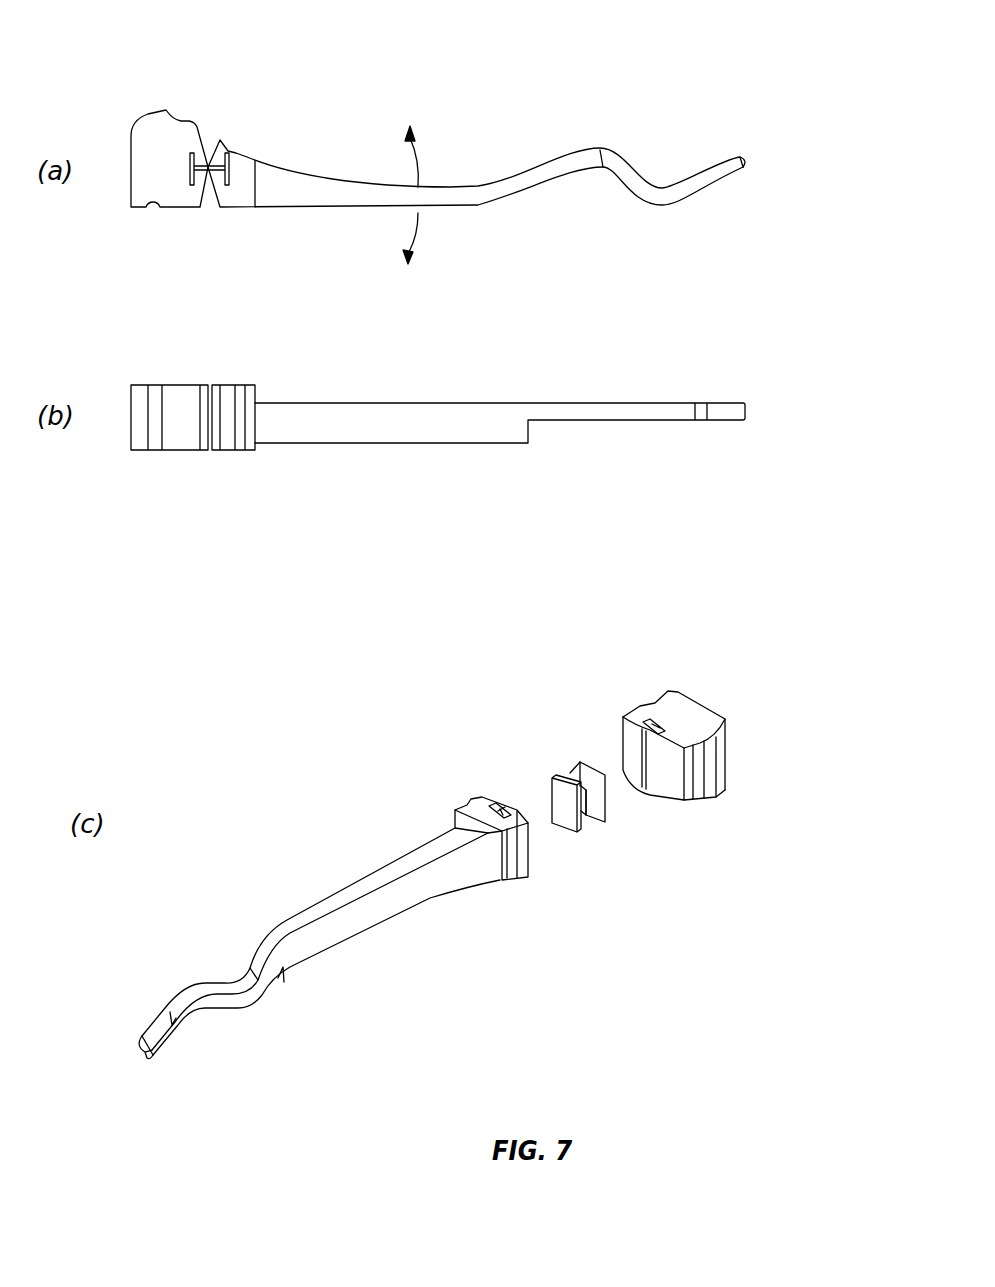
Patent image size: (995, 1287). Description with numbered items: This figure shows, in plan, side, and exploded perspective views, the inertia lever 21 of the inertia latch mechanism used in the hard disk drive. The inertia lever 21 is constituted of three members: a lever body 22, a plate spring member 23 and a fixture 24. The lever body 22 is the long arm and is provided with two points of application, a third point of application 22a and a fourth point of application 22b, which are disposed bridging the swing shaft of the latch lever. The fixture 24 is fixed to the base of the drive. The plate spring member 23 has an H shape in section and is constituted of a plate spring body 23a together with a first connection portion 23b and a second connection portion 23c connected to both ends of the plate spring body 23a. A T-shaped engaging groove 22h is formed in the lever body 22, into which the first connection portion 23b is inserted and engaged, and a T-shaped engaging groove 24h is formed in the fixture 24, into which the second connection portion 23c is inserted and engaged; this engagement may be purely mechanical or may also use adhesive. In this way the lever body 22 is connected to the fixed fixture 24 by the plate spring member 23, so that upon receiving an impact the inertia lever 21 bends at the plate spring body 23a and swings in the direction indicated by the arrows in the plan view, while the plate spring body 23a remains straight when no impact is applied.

The inertia lever 21 is at (353, 141).
The lever body 22 is at (453, 185).
The third point of application 22a is at (603, 169).
The fourth point of application 22b is at (748, 160).
The T-shaped engaging groove 22h is at (500, 807).
The plate spring member 23 is at (207, 163).
The plate spring body 23a is at (575, 781).
The first connection portion 23b is at (567, 833).
The second connection portion 23c is at (590, 815).
The fixture 24 is at (168, 110).
The T-shaped engaging groove 24h is at (652, 727).